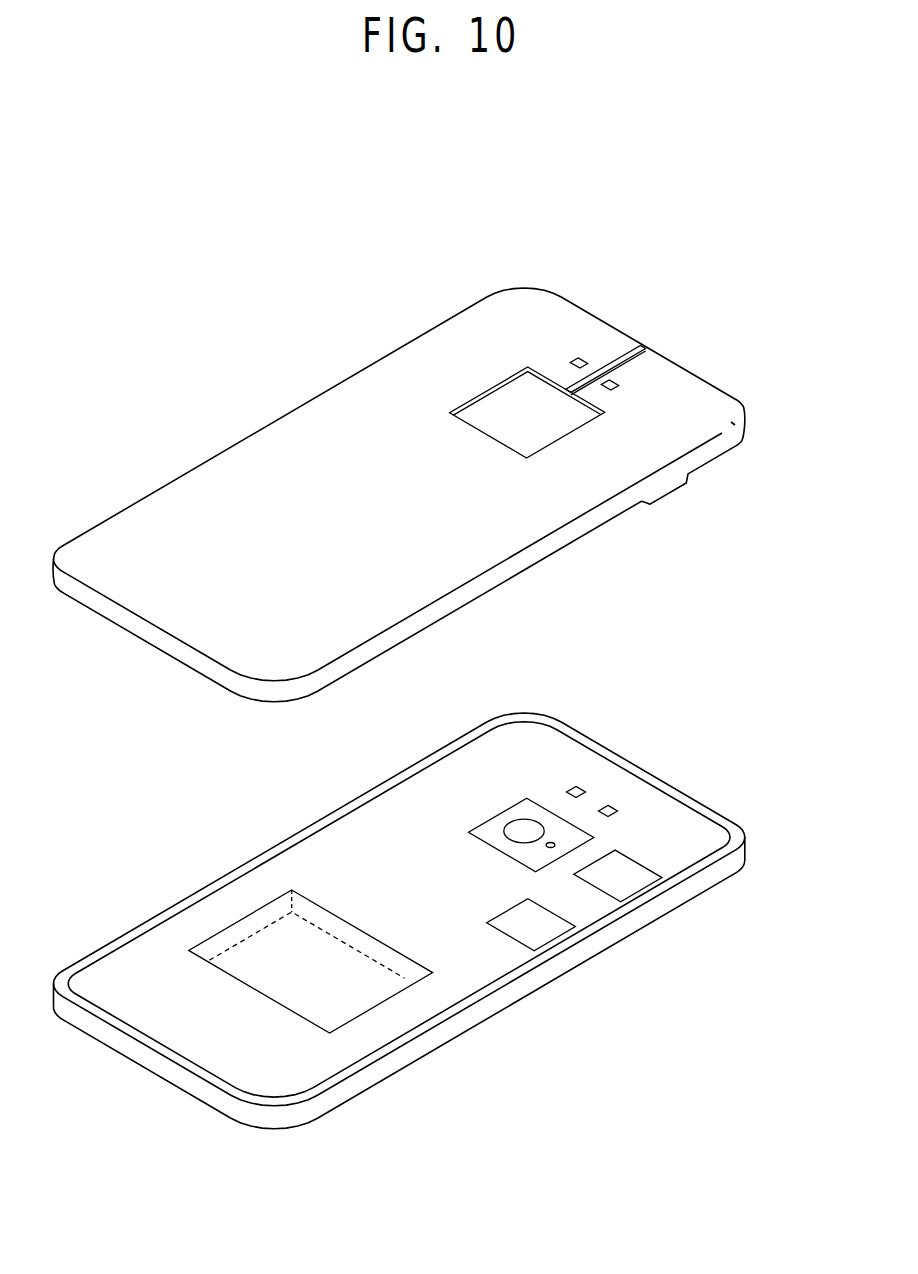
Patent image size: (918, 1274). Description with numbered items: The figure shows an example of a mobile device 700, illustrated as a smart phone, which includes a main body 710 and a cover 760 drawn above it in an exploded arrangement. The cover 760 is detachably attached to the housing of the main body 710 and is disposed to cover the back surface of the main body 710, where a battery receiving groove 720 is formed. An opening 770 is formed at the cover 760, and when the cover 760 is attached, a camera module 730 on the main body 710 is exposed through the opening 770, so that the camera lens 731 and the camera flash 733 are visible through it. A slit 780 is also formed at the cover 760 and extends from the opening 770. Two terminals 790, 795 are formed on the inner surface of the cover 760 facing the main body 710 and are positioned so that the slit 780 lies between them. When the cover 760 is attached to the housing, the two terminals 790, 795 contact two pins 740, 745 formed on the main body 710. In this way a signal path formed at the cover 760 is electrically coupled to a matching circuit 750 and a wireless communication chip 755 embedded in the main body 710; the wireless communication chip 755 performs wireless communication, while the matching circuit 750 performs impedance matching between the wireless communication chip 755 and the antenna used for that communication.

The mobile device 700 is at (411, 218).
The main body 710 is at (749, 822).
The battery receiving groove 720 is at (370, 988).
The camera module 730 is at (497, 813).
The camera lens 731 is at (505, 833).
The camera flash 733 is at (546, 848).
The pin 740 is at (578, 786).
The pin 745 is at (614, 805).
The matching circuit 750 is at (647, 890).
The wireless communication chip 755 is at (562, 935).
The cover 760 is at (739, 392).
The opening 770 is at (525, 406).
The slit 780 is at (607, 361).
The terminal 790 is at (580, 357).
The terminal 795 is at (619, 383).